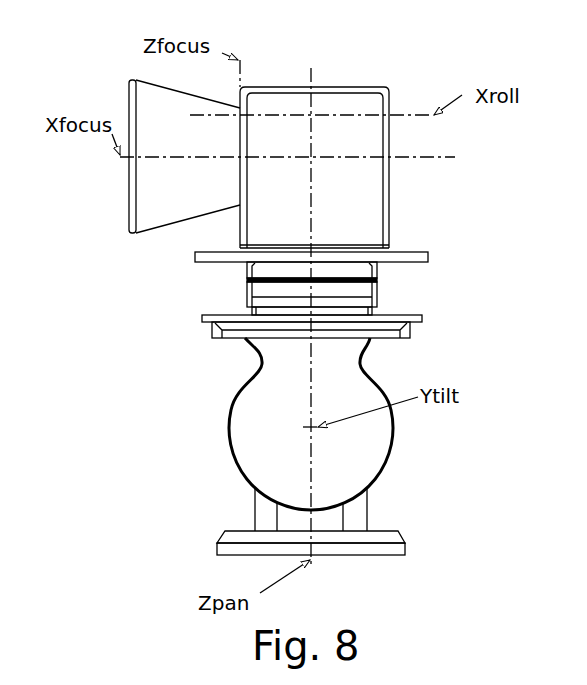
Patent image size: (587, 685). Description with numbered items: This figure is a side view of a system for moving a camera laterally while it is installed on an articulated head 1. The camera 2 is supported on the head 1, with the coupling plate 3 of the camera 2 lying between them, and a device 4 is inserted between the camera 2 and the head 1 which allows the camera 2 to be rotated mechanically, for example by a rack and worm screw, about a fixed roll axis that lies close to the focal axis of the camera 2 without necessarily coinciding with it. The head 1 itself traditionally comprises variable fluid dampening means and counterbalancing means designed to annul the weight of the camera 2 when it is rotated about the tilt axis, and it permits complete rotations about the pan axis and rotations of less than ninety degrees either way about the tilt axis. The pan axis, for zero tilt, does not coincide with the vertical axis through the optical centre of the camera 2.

The articulated head 1 is at (228, 418).
The camera 2 is at (128, 234).
The coupling plate 3 is at (194, 262).
The roll adapter block 4 is at (244, 283).